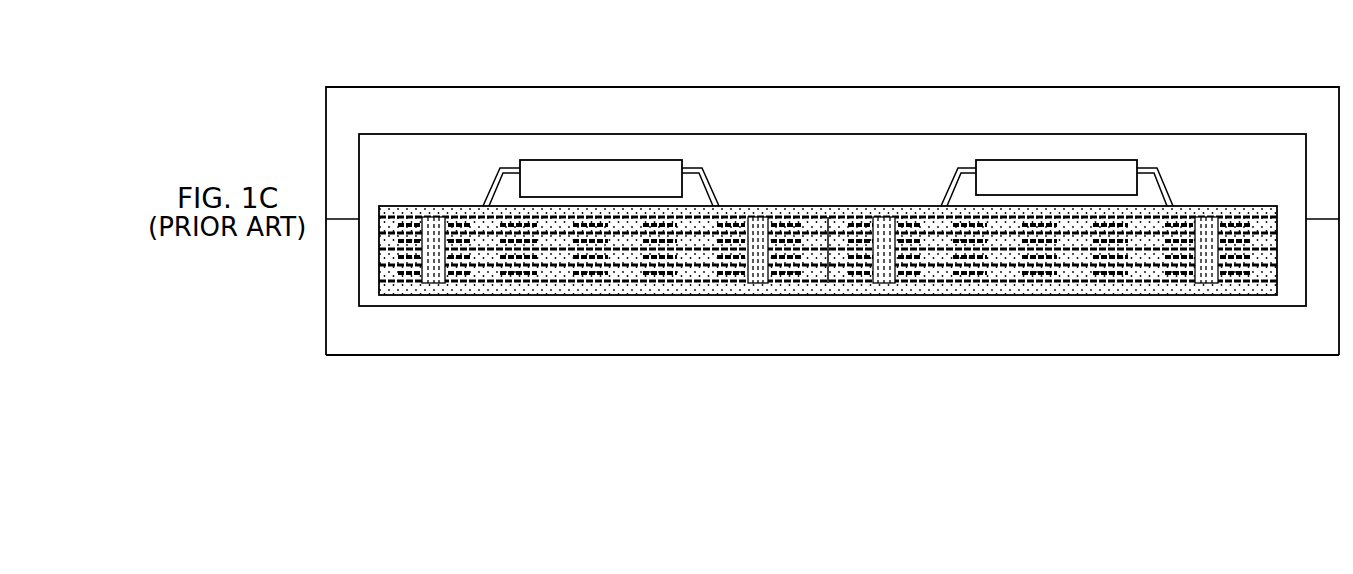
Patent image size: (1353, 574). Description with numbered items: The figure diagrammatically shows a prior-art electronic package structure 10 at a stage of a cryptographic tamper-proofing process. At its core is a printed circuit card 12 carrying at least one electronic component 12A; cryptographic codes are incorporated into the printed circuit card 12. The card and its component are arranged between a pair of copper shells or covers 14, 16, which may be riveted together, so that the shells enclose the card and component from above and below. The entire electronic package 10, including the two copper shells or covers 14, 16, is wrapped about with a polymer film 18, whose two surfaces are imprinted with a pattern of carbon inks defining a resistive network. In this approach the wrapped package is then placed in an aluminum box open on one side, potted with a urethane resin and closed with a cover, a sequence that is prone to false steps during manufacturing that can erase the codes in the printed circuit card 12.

The electronic package structure 10 is at (832, 224).
The printed circuit card 12 is at (727, 182).
The electronic component 12A is at (636, 160).
The copper shell or cover 14 is at (862, 87).
The copper shell or cover 16 is at (624, 336).
The polymer film 18 is at (510, 356).